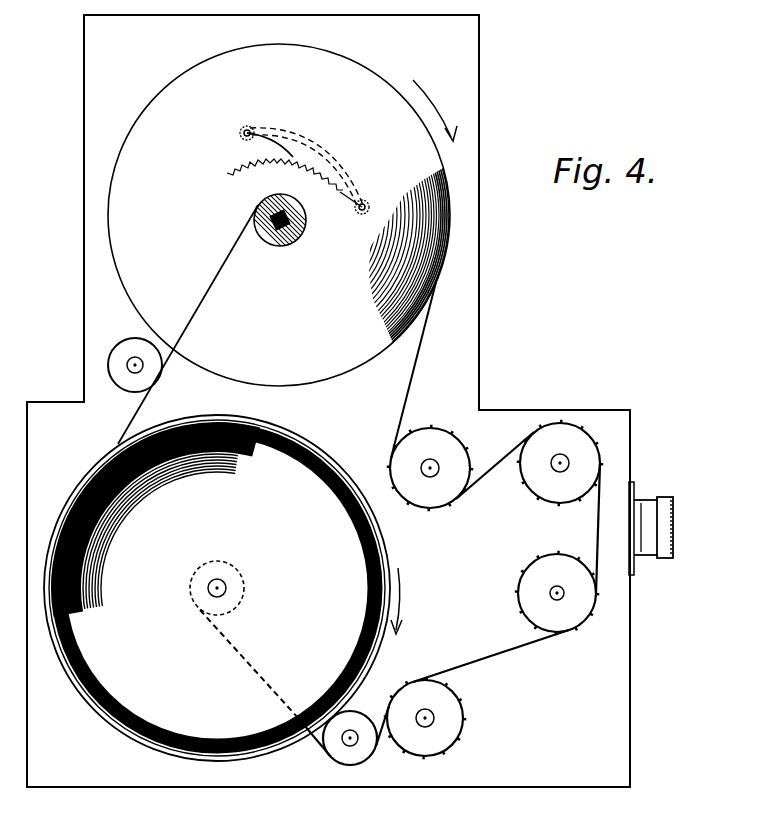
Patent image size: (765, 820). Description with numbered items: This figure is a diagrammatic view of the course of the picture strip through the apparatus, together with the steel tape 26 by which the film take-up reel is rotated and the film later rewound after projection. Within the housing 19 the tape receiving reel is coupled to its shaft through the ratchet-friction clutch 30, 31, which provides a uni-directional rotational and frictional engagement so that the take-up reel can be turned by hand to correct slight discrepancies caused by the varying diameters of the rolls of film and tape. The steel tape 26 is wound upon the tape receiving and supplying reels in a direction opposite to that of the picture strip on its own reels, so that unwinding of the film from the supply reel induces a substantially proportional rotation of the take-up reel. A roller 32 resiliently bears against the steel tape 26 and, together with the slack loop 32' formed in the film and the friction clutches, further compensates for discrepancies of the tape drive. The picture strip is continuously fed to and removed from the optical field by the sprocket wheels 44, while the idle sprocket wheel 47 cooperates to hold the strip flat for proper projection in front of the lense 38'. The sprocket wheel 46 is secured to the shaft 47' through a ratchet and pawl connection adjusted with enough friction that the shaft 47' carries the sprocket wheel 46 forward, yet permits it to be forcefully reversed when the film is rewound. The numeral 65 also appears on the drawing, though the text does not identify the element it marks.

The housing 19 is at (478, 258).
The steel tape 26 is at (124, 440).
The ratchet-friction clutch 30 is at (285, 160).
The ratchet-friction clutch 31 is at (309, 171).
The roller 32 is at (149, 373).
The slack loop 32' is at (367, 746).
The sprocket wheels 44 is at (438, 494).
The sprocket wheel 46 is at (528, 606).
The idle sprocket wheel 47 is at (560, 441).
The shaft 47' is at (525, 571).
The lense 38' is at (660, 520).
The housing 65 is at (328, 417).